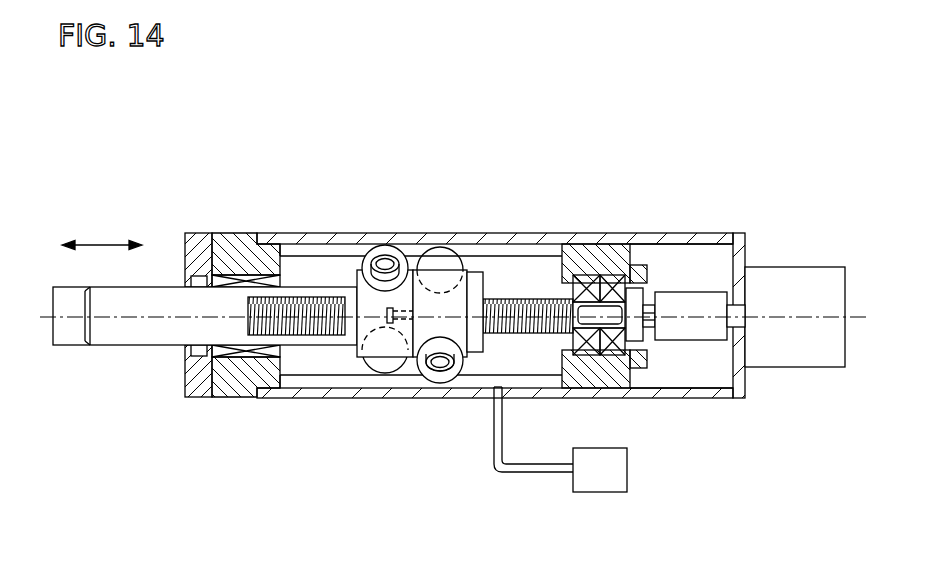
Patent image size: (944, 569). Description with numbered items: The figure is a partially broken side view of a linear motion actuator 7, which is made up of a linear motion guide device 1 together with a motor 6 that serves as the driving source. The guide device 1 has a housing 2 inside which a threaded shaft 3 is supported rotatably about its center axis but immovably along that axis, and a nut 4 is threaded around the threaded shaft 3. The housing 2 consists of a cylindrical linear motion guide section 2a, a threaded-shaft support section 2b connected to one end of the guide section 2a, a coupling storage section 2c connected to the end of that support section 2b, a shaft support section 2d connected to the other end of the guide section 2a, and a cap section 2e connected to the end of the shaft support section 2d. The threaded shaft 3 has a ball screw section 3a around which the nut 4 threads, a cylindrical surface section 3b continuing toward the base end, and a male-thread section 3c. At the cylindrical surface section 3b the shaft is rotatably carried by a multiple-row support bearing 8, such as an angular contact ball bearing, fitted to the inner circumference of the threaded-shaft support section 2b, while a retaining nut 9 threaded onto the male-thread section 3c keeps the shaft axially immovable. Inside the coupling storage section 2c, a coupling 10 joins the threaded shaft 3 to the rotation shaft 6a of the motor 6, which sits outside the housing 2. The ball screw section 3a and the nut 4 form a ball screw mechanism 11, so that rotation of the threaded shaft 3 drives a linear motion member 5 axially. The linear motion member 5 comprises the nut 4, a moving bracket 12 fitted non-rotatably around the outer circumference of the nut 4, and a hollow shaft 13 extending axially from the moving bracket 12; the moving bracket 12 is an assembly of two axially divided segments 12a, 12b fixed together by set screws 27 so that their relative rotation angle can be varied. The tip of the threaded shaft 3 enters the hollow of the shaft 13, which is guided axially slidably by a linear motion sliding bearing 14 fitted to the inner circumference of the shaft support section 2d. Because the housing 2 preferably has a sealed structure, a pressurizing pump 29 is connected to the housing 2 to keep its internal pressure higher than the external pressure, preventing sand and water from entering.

The linear motion guide device 1 is at (739, 230).
The housing 2 is at (290, 227).
The linear motion guide section 2a is at (333, 233).
The threaded-shaft support section 2b is at (618, 245).
The coupling storage section 2c is at (695, 235).
The shaft support section 2d is at (240, 247).
The cap section 2e is at (198, 233).
The threaded shaft 3 is at (610, 437).
The ball screw section 3a is at (540, 332).
The cylindrical surface section 3b is at (597, 326).
The male-thread section 3c is at (640, 341).
The nut 4 is at (470, 283).
The linear motion member 5 is at (305, 357).
The motor 6 is at (787, 288).
The rotation shaft 6a is at (730, 350).
The linear motion actuator 7 is at (773, 151).
The multiple-row support bearing 8 is at (620, 275).
The retaining nut 9 is at (648, 288).
The coupling 10 is at (690, 323).
The ball screw mechanism 11 is at (532, 280).
The moving bracket 12 is at (431, 466).
The segment 12a is at (402, 362).
The segment 12b is at (457, 377).
The shaft 13 is at (122, 328).
The linear motion sliding bearing 14 is at (227, 360).
The set screws 27 is at (350, 258).
The pressurizing pump 29 is at (610, 473).